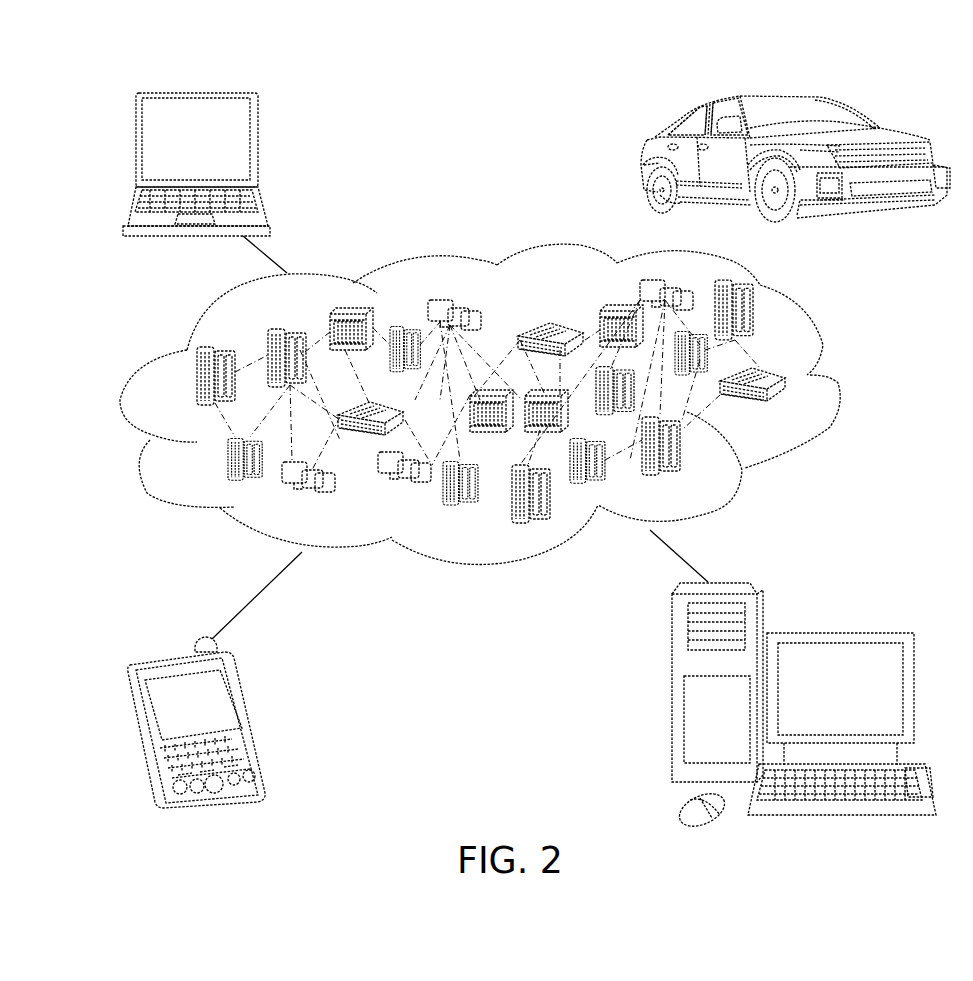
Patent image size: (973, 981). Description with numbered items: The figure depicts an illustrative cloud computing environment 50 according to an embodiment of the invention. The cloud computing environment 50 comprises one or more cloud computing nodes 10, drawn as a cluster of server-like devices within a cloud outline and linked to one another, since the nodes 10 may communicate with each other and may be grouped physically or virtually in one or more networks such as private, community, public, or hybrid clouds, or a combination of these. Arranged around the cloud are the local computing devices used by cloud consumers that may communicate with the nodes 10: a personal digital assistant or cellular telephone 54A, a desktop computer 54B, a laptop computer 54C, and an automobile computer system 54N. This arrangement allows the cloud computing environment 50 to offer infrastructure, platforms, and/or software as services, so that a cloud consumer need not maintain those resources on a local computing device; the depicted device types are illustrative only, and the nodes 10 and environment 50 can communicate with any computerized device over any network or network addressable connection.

The cloud computing node 10 is at (785, 407).
The cloud computing environment 50 is at (837, 383).
The personal digital assistant or cellular telephone 54A is at (250, 717).
The desktop computer 54B is at (840, 632).
The laptop computer 54C is at (255, 148).
The automobile computer system 54N is at (642, 163).